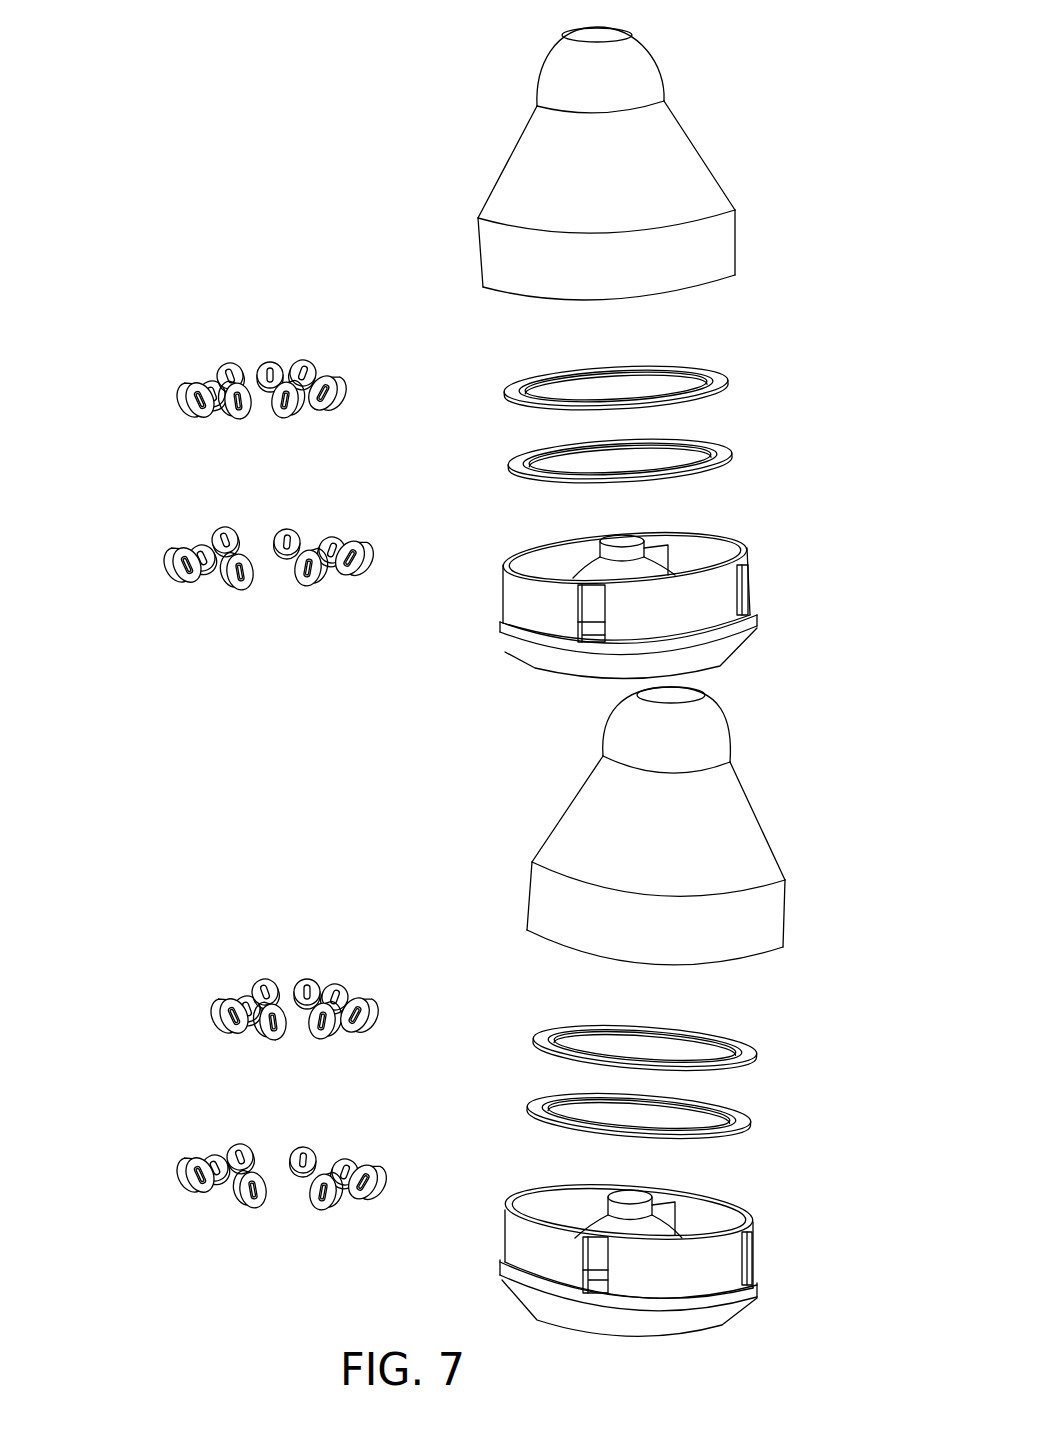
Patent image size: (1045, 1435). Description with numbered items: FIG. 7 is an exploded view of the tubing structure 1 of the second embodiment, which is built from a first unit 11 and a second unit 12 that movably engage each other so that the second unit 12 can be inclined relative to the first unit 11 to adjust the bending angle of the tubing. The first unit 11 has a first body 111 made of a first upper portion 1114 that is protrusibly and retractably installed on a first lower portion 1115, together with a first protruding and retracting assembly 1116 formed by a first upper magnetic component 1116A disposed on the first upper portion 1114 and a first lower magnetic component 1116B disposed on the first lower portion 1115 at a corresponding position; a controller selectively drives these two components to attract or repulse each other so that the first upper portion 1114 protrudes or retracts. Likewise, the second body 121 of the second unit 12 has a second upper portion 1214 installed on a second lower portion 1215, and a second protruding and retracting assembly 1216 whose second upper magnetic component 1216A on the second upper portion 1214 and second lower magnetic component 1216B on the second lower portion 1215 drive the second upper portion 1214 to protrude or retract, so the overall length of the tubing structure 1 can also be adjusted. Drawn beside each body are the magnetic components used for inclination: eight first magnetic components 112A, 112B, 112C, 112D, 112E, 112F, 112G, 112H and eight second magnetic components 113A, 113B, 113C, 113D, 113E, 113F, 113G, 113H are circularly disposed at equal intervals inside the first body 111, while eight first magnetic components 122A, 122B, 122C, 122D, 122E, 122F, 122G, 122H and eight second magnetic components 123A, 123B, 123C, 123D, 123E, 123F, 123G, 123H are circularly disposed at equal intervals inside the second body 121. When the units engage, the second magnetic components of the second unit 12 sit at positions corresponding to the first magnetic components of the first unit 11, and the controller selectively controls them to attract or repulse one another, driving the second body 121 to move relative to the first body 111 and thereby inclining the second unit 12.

The tubing structure 1 is at (157, 112).
The second unit 12 is at (289, 240).
The first unit 11 is at (363, 836).
The second body 121 is at (830, 96).
The first body 111 is at (814, 758).
The second upper portion 1214 is at (675, 172).
The second protruding and retracting assembly 1216 is at (828, 325).
The second upper magnetic component 1216A is at (708, 380).
The second lower magnetic component 1216B is at (708, 445).
The second lower portion 1215 is at (722, 597).
The first upper portion 1114 is at (730, 827).
The first protruding and retracting assembly 1116 is at (833, 1020).
The first upper magnetic component 1116A is at (735, 1046).
The first lower magnetic component 1116B is at (735, 1116).
The first lower portion 1115 is at (722, 1260).
The first magnetic component 122A is at (336, 398).
The first magnetic component 122B is at (314, 366).
The first magnetic component 122C is at (272, 362).
The first magnetic component 122D is at (232, 366).
The first magnetic component 122E is at (188, 386).
The first magnetic component 122F is at (197, 418).
The first magnetic component 122G is at (238, 424).
The first magnetic component 122H is at (290, 420).
The second magnetic component 123A is at (364, 570).
The second magnetic component 123B is at (344, 542).
The second magnetic component 123C is at (292, 530).
The second magnetic component 123D is at (220, 532).
The second magnetic component 123E is at (178, 570).
The second magnetic component 123F is at (190, 586).
The second magnetic component 123G is at (242, 592).
The second magnetic component 123H is at (312, 588).
The first magnetic component 112A is at (357, 1036).
The first magnetic component 112B is at (348, 999).
The first magnetic component 112C is at (312, 981).
The first magnetic component 112D is at (265, 981).
The first magnetic component 112E is at (224, 1000).
The first magnetic component 112F is at (232, 1036).
The first magnetic component 112G is at (273, 1044).
The first magnetic component 112H is at (324, 1043).
The second magnetic component 113A is at (366, 1202).
The second magnetic component 113B is at (360, 1171).
The second magnetic component 113C is at (314, 1149).
The second magnetic component 113D is at (234, 1148).
The second magnetic component 113E is at (188, 1174).
The second magnetic component 113F is at (198, 1196).
The second magnetic component 113G is at (253, 1210).
The second magnetic component 113H is at (323, 1212).